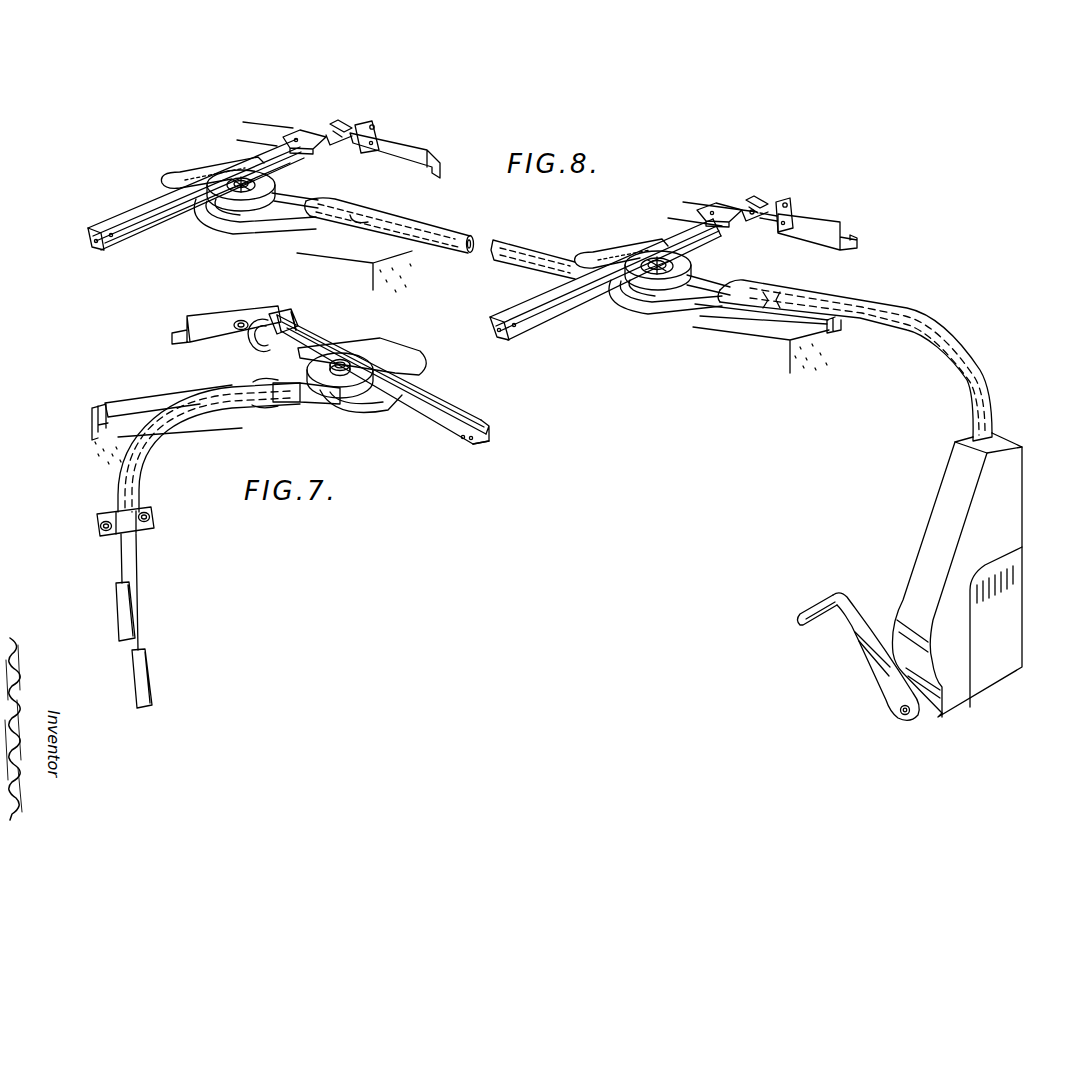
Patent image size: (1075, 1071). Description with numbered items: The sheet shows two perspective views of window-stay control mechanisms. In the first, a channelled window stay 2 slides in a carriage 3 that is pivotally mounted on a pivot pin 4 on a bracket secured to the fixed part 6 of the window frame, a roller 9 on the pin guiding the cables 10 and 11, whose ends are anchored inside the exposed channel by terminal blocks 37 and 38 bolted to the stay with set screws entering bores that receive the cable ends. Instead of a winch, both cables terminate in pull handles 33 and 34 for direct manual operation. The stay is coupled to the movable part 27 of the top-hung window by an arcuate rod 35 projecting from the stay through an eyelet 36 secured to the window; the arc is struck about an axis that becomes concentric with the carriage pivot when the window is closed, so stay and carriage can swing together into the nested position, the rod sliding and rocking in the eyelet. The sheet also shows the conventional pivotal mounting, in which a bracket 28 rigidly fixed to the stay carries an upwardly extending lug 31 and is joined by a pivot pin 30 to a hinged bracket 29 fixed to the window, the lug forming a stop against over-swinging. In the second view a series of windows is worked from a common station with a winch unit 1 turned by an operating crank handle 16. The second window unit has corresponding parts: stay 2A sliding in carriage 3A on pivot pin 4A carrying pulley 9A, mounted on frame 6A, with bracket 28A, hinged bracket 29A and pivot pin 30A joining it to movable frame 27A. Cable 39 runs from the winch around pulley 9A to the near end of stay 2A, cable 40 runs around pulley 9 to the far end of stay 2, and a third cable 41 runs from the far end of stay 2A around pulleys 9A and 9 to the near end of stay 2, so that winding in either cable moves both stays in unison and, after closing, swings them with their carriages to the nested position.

In FIG. 8, the winch unit 1 is at (1022, 551).
In FIG. 7, the window stay 2 is at (162, 208).
In FIG. 8, the window stay 2A is at (657, 243).
In FIG. 7, the carriage 3 is at (316, 369).
In FIG. 8, the carriage 3A is at (627, 263).
In FIG. 7, the pivot pin 4 is at (240, 183).
In FIG. 8, the pivot pin 4A is at (680, 258).
In FIG. 7, the window frame 6 is at (380, 241).
In FIG. 8, the window frame 6A is at (810, 313).
In FIG. 7, the roller 9 is at (243, 218).
In FIG. 8, the pulley 9A is at (652, 300).
In FIG. 7, the cable 10 is at (416, 407).
In FIG. 7, the cable 11 is at (353, 353).
In FIG. 8, the operating crank handle 16 is at (862, 632).
In FIG. 7, the movable frame 27 is at (402, 158).
In FIG. 8, the movable frame 27A is at (812, 230).
In FIG. 7, the bracket 28 is at (301, 132).
In FIG. 8, the bracket 28A is at (724, 208).
In FIG. 7, the hinged bracket 29 is at (373, 134).
In FIG. 8, the hinged bracket 29A is at (762, 212).
In FIG. 7, the pivot pin 30 is at (342, 128).
In FIG. 8, the pivot pin 30A is at (760, 238).
In FIG. 7, the upwardly extending lug 31 is at (190, 178).
In FIG. 7, the pull handle 33 is at (124, 613).
In FIG. 7, the pull handle 34 is at (145, 678).
In FIG. 7, the arcuate rod 35 is at (246, 351).
In FIG. 7, the eyelet 36 is at (256, 320).
In FIG. 7, the terminal block 37 is at (463, 440).
In FIG. 7, the terminal block 38 is at (290, 321).
In FIG. 8, the cable 39 is at (957, 440).
In FIG. 8, the cable 40 is at (1023, 446).
In FIG. 7, the cable 41 is at (152, 217).
In FIG. 8, the cable 41 is at (690, 234).